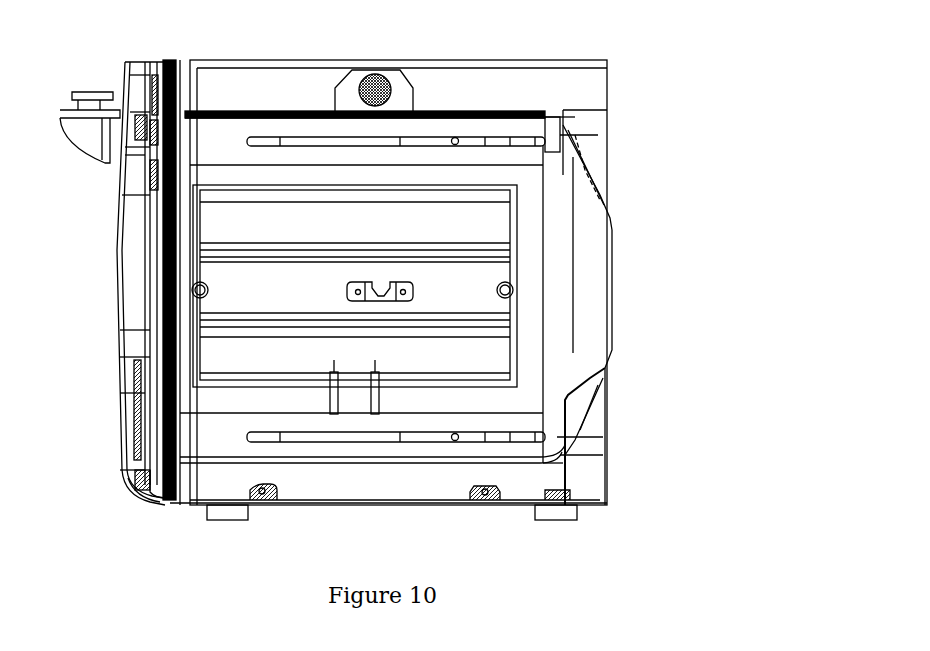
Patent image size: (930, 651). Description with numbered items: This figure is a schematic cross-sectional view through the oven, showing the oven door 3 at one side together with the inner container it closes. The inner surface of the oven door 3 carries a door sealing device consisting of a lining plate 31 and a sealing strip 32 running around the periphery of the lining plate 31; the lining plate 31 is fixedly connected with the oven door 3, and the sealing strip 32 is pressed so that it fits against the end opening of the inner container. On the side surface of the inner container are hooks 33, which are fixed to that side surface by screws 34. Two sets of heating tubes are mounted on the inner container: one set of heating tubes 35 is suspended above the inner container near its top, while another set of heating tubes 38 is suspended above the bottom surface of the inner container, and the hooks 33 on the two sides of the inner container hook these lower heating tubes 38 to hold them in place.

The oven door 3 is at (120, 205).
The lining plate 31 is at (162, 245).
The sealing strip 32 is at (127, 483).
The hook 33 is at (488, 325).
The screw 34 is at (192, 290).
The heating tube 35 is at (487, 140).
The heating tube 38 is at (420, 440).